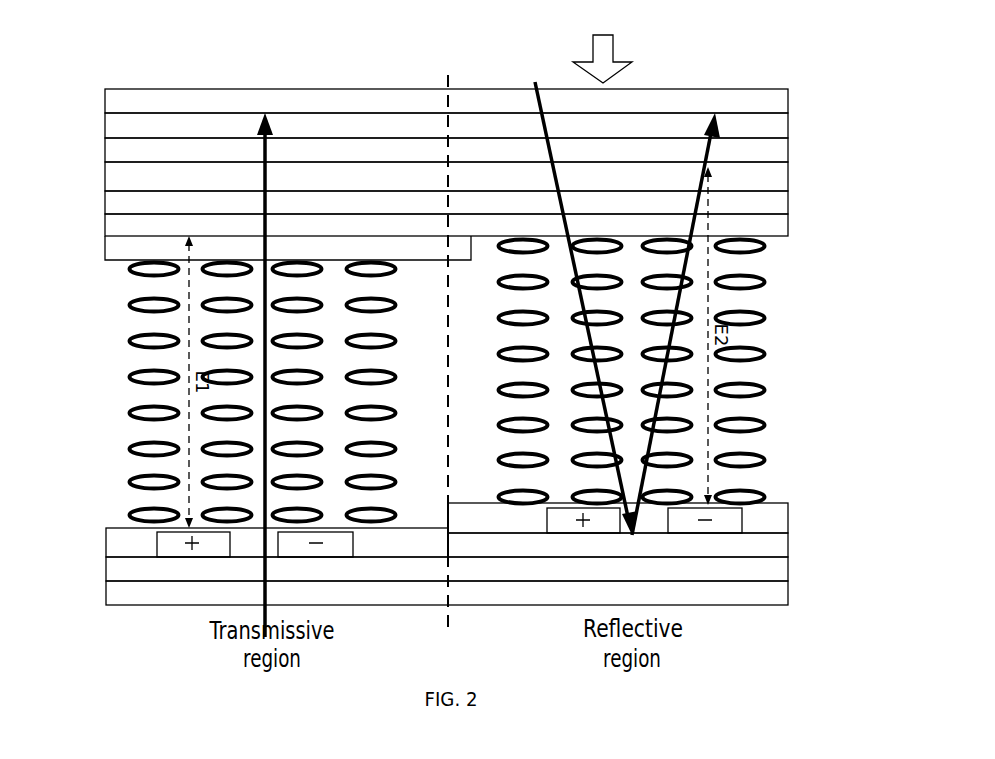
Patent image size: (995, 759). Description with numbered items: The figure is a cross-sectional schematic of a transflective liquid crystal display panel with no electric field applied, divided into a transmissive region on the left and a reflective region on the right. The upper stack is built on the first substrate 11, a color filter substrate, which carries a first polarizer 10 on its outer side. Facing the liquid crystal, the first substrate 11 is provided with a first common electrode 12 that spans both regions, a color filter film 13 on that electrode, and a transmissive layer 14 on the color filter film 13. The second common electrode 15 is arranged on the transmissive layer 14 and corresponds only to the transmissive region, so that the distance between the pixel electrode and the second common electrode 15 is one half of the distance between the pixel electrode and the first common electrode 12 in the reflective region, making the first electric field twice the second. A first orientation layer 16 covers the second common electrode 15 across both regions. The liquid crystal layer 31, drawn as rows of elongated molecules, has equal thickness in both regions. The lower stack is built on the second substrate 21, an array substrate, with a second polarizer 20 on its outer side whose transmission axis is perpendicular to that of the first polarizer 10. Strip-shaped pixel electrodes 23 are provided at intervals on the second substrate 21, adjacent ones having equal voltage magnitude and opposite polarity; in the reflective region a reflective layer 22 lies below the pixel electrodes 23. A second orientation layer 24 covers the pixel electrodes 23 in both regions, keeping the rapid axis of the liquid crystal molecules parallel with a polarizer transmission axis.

The first polarizer 10 is at (788, 99).
The first substrate 11 is at (788, 128).
The first common electrode 12 is at (788, 152).
The color filter film 13 is at (788, 177).
The transmissive layer 14 is at (788, 207).
The second common electrode 15 is at (105, 225).
The first orientation layer 16 is at (788, 230).
The liquid crystal layer 31 is at (770, 283).
The pixel electrodes 23 is at (278, 532).
The second orientation layer 24 is at (106, 542).
The reflective layer 22 is at (788, 539).
The second substrate 21 is at (788, 567).
The second polarizer 20 is at (788, 597).